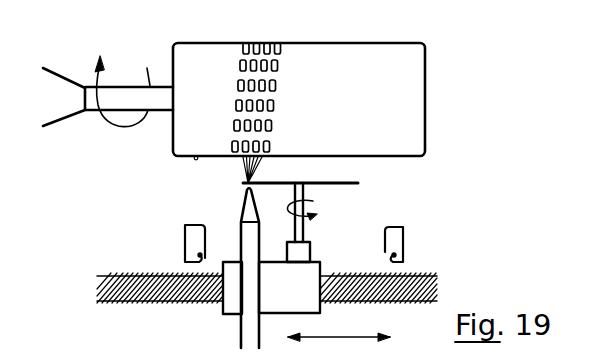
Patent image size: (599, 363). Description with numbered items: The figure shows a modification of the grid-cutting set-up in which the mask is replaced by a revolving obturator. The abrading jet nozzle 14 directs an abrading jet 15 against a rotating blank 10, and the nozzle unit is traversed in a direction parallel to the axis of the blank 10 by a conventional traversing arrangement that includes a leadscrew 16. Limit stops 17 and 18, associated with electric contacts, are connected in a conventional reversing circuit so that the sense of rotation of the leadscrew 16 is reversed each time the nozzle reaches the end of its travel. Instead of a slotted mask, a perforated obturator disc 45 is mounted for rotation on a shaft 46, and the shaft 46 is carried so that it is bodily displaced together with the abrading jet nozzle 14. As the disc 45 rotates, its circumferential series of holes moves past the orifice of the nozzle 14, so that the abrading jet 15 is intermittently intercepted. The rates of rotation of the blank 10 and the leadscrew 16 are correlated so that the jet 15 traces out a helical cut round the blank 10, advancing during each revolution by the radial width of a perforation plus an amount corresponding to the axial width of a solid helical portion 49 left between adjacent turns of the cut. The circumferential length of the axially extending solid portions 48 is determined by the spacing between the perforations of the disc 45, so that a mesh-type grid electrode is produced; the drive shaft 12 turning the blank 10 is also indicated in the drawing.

The blank 10 is at (383, 56).
The drive shaft 12 is at (196, 43).
The abrading jet nozzle 14 is at (247, 231).
The abrading jet 15 is at (246, 172).
The leadscrew 16 is at (136, 302).
The limit stop 17 is at (192, 238).
The limit stop 18 is at (405, 243).
The perforated obturator disc 45 is at (357, 182).
The shaft 46 is at (315, 203).
The axially extending solid portion 48 is at (277, 100).
The solid helical portion 49 is at (275, 50).